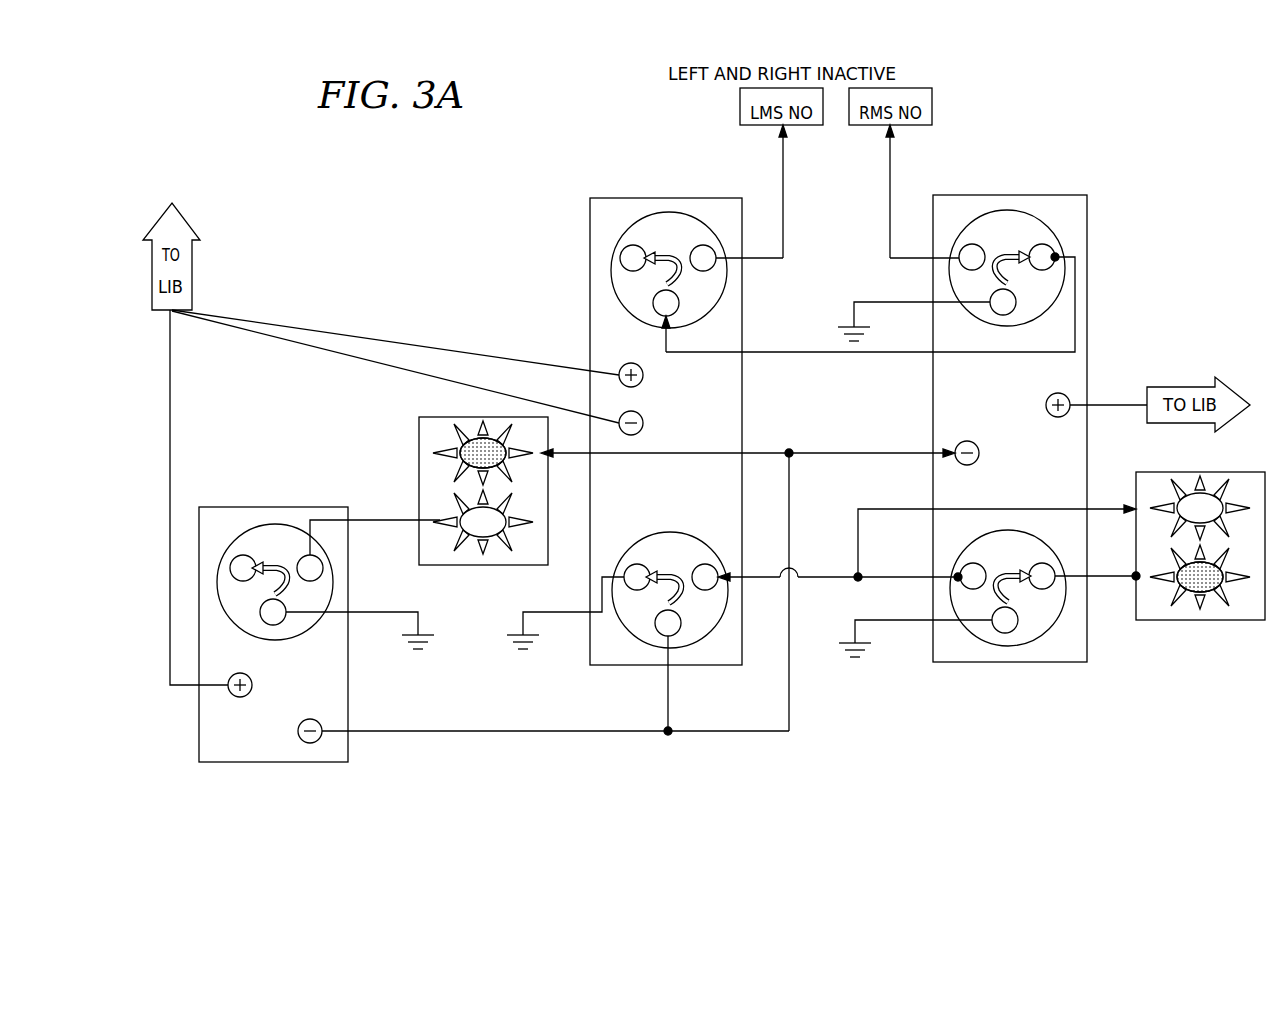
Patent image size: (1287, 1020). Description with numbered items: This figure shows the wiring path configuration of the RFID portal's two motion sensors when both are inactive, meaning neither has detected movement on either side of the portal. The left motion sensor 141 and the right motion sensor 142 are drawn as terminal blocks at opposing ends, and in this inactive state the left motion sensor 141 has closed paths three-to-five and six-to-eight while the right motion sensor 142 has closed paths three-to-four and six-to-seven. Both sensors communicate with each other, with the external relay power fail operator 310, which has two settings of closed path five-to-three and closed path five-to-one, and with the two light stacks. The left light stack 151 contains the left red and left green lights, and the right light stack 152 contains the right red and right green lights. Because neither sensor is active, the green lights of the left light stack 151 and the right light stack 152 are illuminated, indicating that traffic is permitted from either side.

The left motion sensor 141 is at (590, 233).
The right motion sensor 142 is at (1089, 218).
The left light stack 151 is at (1197, 622).
The right light stack 152 is at (419, 438).
The external relay power fail operator 310 is at (295, 507).